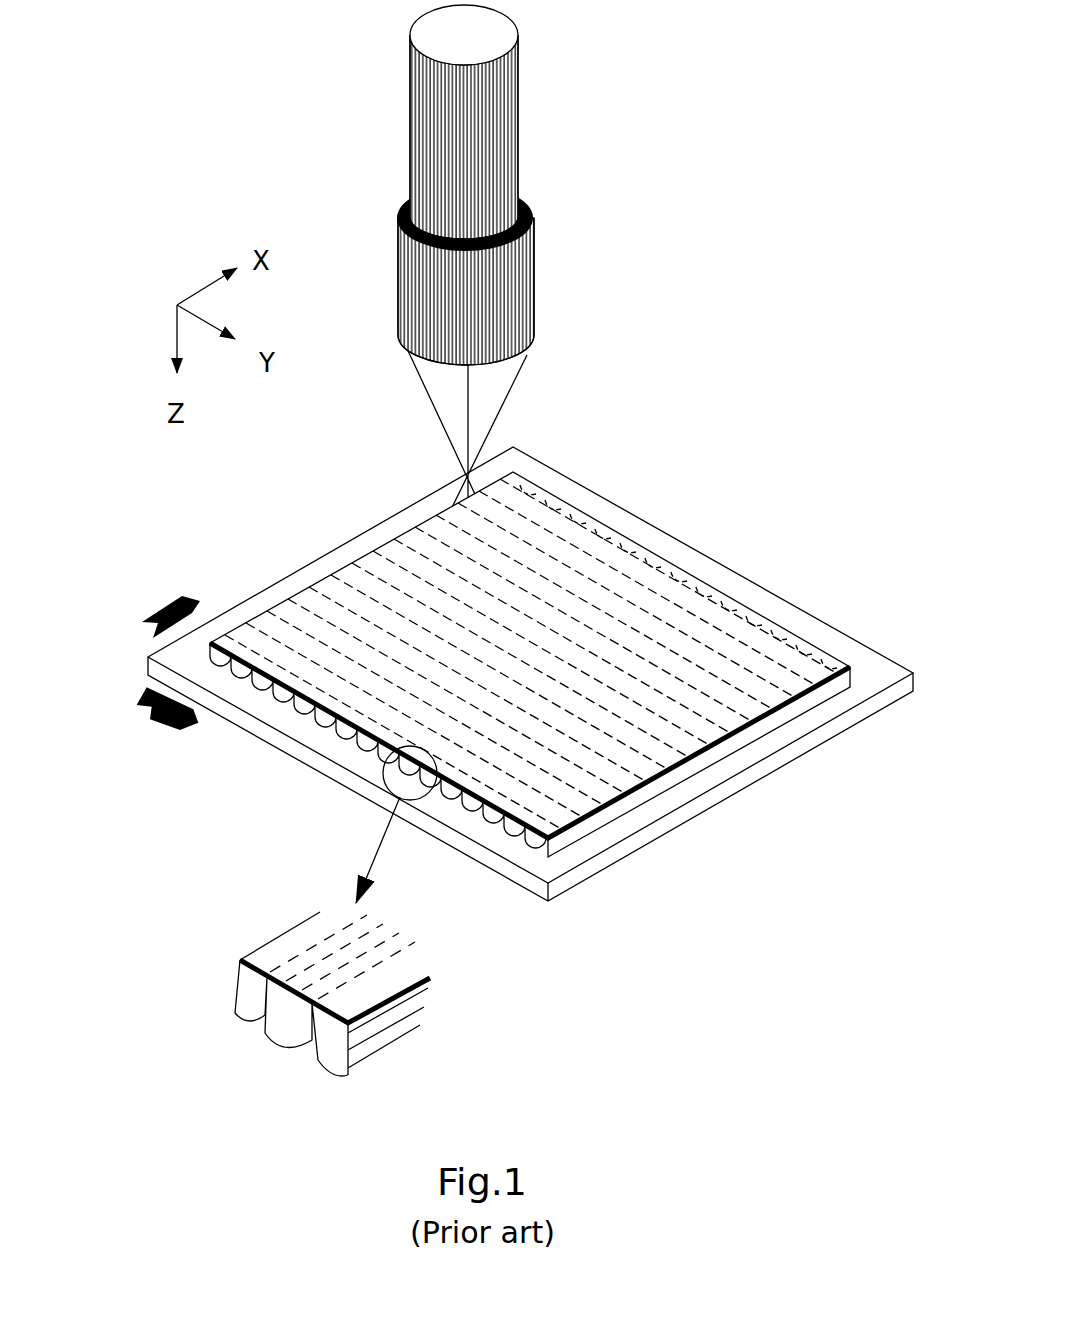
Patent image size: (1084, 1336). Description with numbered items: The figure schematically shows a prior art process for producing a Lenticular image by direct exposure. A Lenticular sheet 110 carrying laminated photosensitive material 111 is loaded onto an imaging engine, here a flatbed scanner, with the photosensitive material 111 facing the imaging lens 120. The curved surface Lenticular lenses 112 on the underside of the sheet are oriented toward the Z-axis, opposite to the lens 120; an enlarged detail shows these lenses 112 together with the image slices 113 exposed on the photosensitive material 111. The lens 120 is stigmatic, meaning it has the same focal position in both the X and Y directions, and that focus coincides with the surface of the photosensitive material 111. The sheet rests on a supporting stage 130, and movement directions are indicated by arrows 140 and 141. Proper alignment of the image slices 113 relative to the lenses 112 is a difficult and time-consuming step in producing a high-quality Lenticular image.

The Lenticular sheet 110 is at (767, 633).
The photosensitive material 111 is at (430, 980).
The Lenticular lenses 112 is at (293, 1025).
The image slices 113 is at (318, 988).
The imaging lens 120 is at (503, 147).
The stage 130 is at (323, 762).
The movement direction arrow 140 is at (152, 634).
The movement direction arrow 141 is at (160, 722).